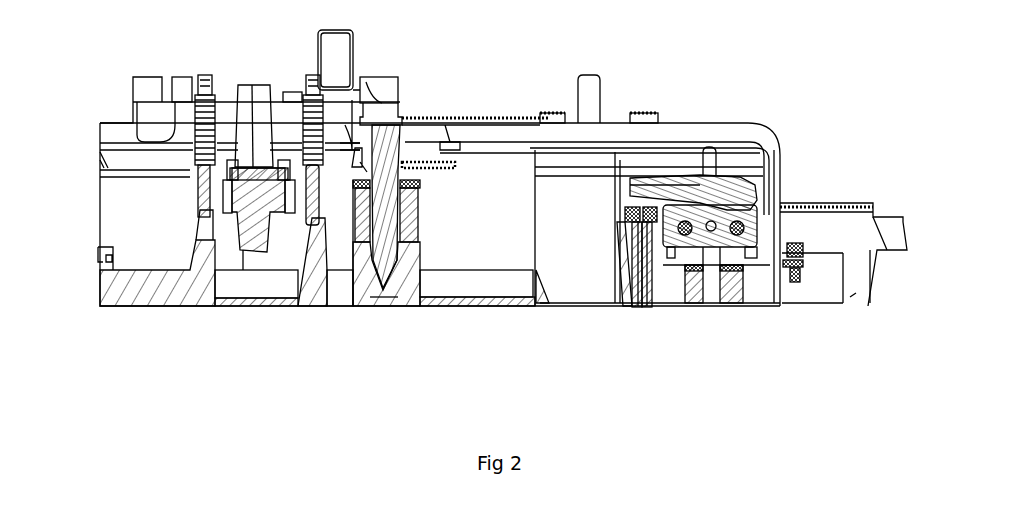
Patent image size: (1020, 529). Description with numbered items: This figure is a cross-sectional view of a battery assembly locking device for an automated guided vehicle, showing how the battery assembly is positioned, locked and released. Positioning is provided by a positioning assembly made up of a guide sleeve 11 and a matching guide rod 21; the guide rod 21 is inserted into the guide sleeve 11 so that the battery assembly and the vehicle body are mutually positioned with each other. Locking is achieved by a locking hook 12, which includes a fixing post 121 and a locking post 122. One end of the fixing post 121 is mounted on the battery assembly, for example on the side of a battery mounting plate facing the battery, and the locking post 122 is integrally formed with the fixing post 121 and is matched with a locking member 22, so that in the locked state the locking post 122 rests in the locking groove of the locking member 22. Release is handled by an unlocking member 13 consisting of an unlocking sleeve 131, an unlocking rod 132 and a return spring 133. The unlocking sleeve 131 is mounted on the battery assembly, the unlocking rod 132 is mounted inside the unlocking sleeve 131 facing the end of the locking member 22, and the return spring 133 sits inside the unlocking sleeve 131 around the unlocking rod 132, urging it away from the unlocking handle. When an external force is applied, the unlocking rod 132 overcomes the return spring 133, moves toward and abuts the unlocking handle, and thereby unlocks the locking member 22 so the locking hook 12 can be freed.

The guide sleeve 11 is at (412, 248).
The guide rod 21 is at (388, 262).
The locking hook 12 is at (726, 312).
The fixing post 121 is at (710, 263).
The locking post 122 is at (717, 273).
The unlocking member 13 is at (599, 321).
The unlocking sleeve 131 is at (625, 257).
The unlocking rod 132 is at (638, 270).
The return spring 133 is at (652, 268).
The locking member 22 is at (716, 228).